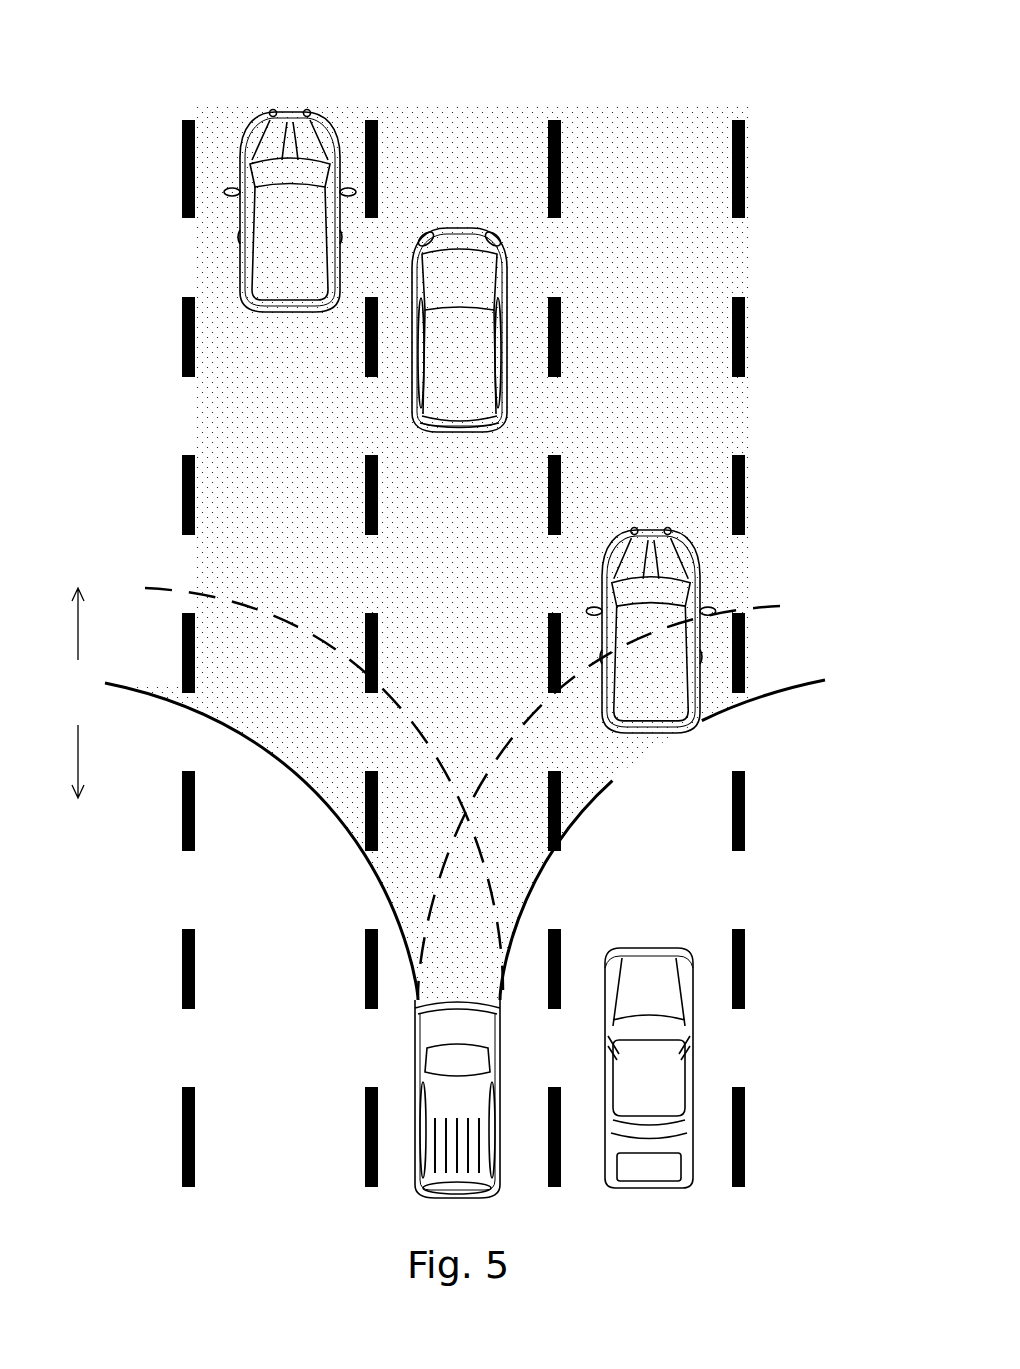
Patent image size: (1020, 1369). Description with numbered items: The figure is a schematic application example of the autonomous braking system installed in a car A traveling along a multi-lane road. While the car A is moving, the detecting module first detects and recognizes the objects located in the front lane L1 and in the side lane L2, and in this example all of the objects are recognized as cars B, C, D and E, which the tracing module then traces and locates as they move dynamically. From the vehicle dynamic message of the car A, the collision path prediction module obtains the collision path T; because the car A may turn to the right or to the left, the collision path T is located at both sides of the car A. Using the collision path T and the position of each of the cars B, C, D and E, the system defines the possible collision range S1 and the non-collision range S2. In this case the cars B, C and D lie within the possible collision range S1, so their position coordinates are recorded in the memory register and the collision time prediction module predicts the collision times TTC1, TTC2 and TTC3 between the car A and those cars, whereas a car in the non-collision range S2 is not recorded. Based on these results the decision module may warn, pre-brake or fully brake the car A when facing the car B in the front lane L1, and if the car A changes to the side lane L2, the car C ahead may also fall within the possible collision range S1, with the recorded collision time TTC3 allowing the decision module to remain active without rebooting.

The car A is at (415, 1185).
The car B is at (443, 235).
The car C is at (680, 705).
The car D is at (270, 140).
The car E is at (690, 1068).
The front lane L1 is at (466, 76).
The side lane L2 is at (666, 76).
The collision path T is at (145, 690).
The possible collision range S1 is at (77, 606).
The non-collision range S2 is at (77, 781).
The collision time TTC1 is at (291, 335).
The collision time TTC2 is at (456, 452).
The collision time TTC3 is at (648, 753).